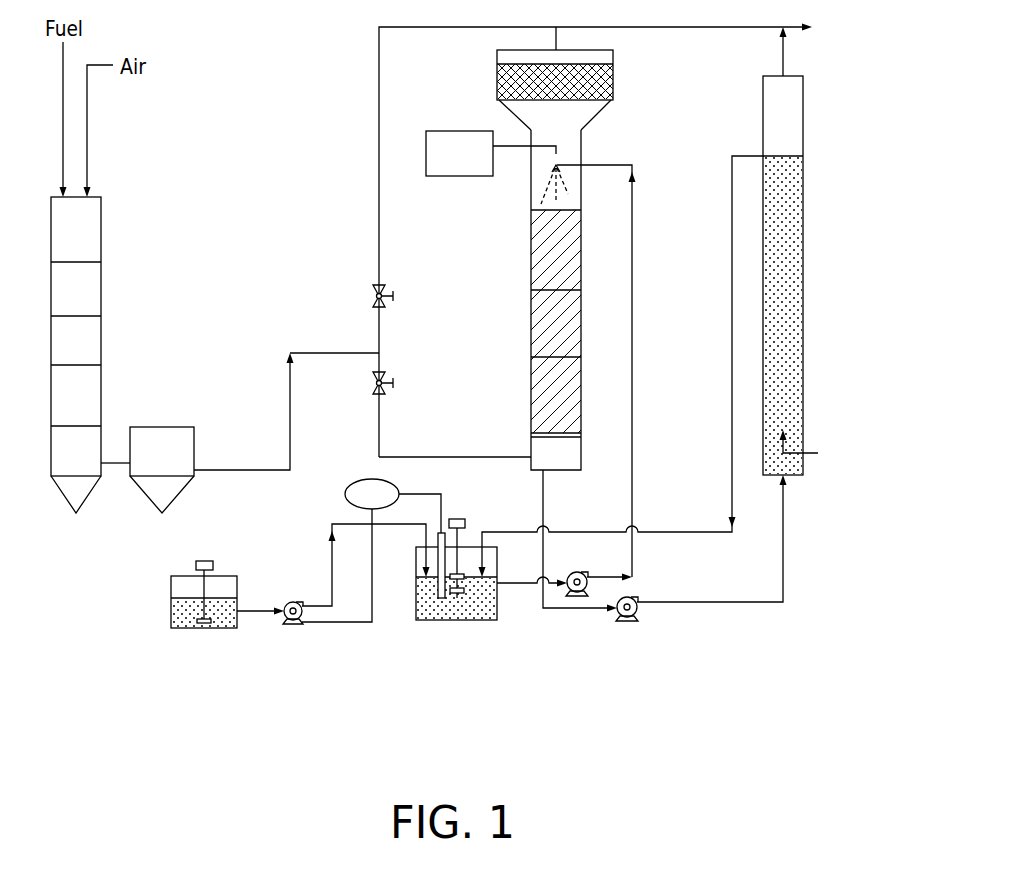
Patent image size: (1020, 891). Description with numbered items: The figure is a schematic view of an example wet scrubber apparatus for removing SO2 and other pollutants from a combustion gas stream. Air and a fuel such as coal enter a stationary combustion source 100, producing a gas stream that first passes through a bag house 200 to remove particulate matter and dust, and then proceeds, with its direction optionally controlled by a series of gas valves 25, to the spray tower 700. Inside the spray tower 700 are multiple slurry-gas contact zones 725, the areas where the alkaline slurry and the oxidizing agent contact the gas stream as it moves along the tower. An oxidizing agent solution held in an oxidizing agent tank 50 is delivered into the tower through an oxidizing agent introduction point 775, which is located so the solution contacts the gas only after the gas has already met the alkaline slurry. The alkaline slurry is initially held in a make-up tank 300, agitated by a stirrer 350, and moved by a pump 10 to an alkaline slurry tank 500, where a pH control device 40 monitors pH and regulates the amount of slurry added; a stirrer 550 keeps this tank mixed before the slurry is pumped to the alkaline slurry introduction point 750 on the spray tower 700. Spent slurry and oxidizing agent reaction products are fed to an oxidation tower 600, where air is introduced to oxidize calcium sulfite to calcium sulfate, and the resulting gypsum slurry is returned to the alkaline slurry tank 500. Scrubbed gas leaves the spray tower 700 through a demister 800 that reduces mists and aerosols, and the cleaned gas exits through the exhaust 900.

The pump 10 is at (293, 621).
The gas valve 25 is at (371, 296).
The pH control device 40 is at (384, 504).
The oxidizing agent tank 50 is at (471, 162).
The stationary combustion source 100 is at (101, 311).
The bag house 200 is at (163, 427).
The make-up tank 300 is at (171, 603).
The stirrer 350 is at (204, 628).
The alkaline slurry tank 500 is at (422, 622).
The stirrer 550 is at (458, 605).
The oxidation tower 600 is at (803, 303).
The spray tower 700 is at (581, 268).
The slurry-gas contact zone 725 is at (531, 323).
The alkaline slurry introduction point 750 is at (618, 165).
The oxidizing agent introduction point 775 is at (513, 150).
The demister 800 is at (497, 78).
The exhaust 900 is at (837, 30).